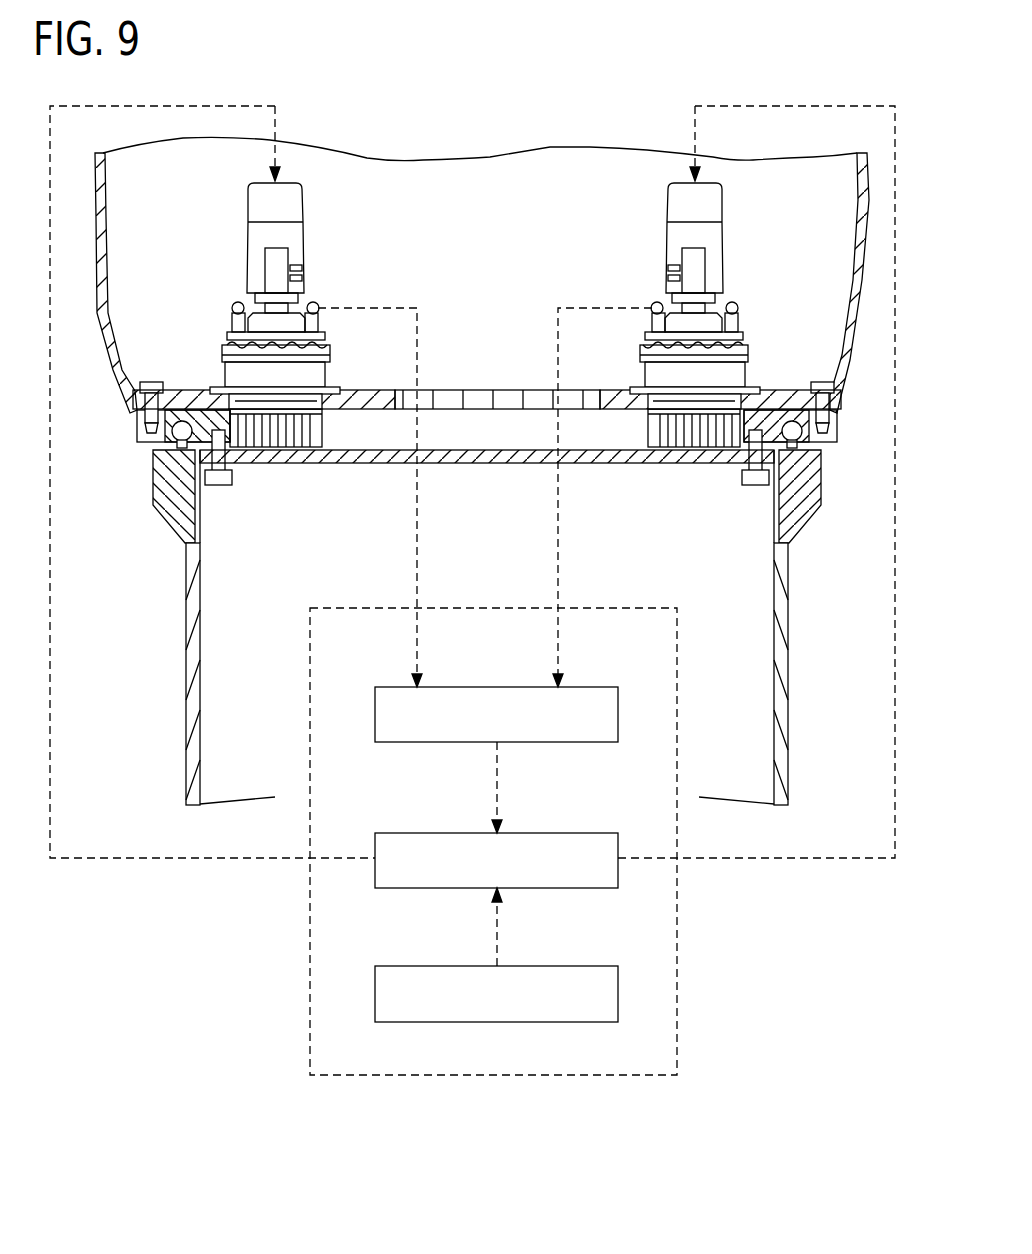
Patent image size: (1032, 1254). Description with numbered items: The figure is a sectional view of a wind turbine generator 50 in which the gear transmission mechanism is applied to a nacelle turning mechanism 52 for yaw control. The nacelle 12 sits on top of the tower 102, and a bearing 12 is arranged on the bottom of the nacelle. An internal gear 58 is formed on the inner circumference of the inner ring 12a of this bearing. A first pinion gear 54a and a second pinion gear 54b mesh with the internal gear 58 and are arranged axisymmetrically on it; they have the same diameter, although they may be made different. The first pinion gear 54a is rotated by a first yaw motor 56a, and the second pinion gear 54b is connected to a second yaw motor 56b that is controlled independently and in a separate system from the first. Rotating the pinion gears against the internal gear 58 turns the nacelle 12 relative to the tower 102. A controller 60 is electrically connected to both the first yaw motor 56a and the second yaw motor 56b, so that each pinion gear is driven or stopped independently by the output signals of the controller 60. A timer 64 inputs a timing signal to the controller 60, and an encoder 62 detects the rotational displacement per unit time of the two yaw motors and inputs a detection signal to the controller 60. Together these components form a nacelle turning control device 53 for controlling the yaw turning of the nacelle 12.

The wind turbine generator 50 is at (474, 122).
The bearing 12 is at (848, 438).
The inner ring 12a is at (773, 398).
The tower 102 is at (186, 658).
The internal gear 58 is at (485, 400).
The nacelle turning mechanism 52 is at (480, 503).
The first yaw motor 56a is at (305, 230).
The second yaw motor 56b is at (666, 229).
The first pinion gear 54a is at (278, 448).
The second pinion gear 54b is at (705, 448).
The nacelle turning control device 53 is at (677, 953).
The encoder 62 is at (580, 687).
The controller 60 is at (580, 833).
The timer 64 is at (580, 966).